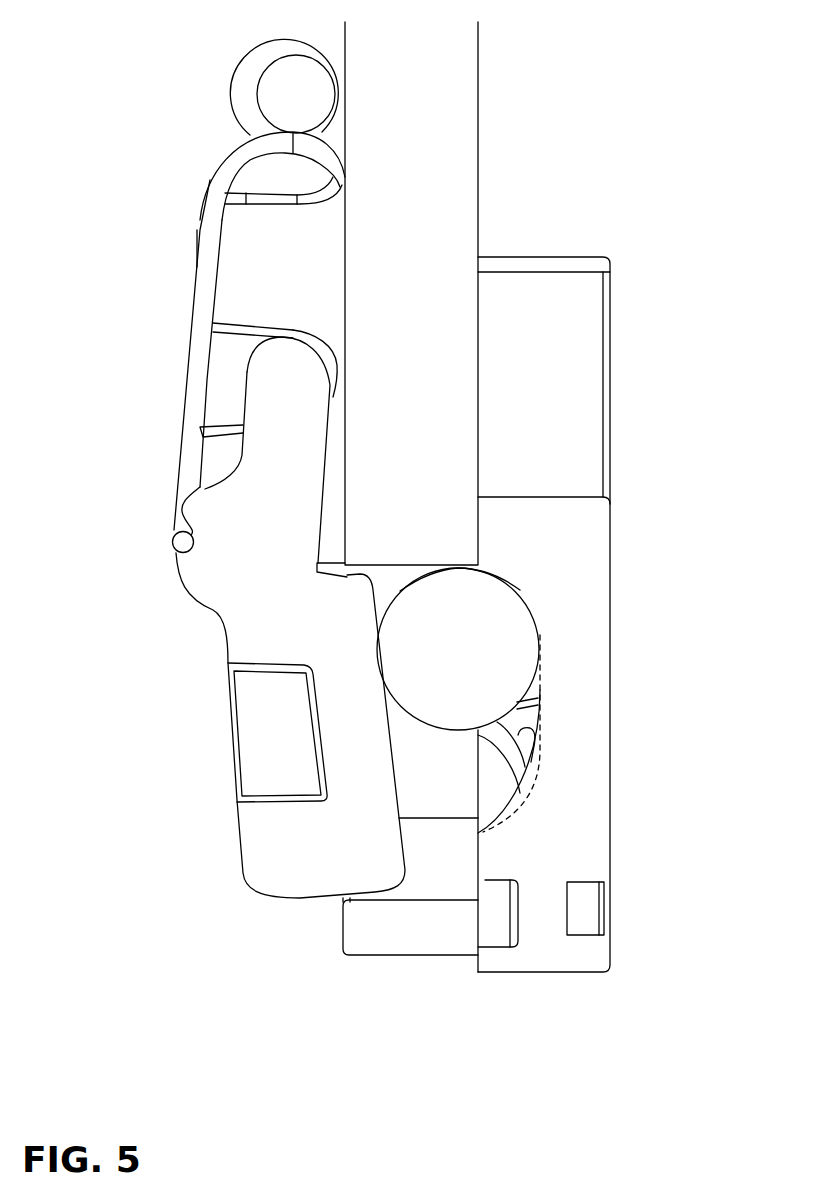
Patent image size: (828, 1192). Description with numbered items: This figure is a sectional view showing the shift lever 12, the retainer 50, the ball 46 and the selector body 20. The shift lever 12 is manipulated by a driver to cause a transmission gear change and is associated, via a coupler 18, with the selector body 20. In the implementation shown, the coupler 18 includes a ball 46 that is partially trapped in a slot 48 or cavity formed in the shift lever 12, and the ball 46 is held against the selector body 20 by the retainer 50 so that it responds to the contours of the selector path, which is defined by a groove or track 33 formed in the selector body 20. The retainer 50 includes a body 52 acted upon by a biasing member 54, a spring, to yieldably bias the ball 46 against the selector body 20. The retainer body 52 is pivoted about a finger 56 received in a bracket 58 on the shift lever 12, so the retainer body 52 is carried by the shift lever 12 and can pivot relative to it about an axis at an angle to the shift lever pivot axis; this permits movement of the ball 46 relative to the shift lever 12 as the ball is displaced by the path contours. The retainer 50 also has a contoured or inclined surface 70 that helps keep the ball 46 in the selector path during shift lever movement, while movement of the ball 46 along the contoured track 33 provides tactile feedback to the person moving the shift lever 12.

The shift lever 12 is at (427, 154).
The coupler 18 is at (312, 934).
The selector body 20 is at (553, 375).
The track 33 is at (527, 762).
The ball 46 is at (490, 632).
The slot 48 is at (387, 565).
The retainer 50 is at (253, 487).
The retainer body 52 is at (240, 622).
The biasing member 54 is at (228, 167).
The finger 56 is at (287, 370).
The bracket 58 is at (235, 294).
The inclined surface 70 is at (405, 847).